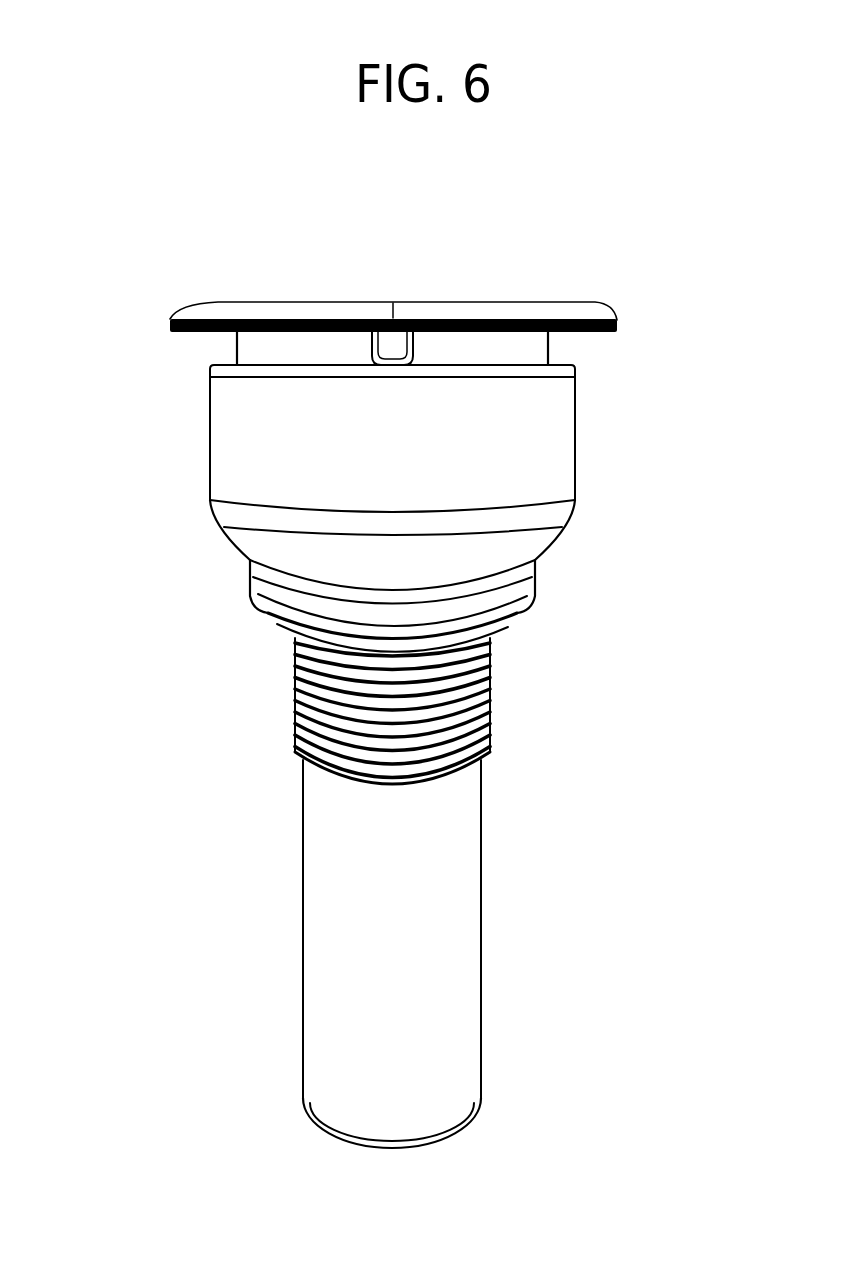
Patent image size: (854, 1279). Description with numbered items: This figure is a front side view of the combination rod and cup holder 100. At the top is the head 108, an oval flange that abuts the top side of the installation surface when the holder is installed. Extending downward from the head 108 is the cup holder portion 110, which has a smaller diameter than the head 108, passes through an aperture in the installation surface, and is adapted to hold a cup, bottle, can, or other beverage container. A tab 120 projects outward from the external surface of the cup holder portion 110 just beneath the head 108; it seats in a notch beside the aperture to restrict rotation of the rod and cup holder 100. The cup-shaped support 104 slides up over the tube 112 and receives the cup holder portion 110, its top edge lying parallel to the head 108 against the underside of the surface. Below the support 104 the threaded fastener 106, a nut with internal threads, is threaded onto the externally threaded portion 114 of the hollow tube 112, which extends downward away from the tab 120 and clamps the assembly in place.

The combination rod and cup holder 100 is at (168, 210).
The support 104 is at (568, 425).
The threaded fastener 106 is at (499, 632).
The head 108 is at (615, 321).
The cup holder portion 110 is at (545, 350).
The tube 112 is at (471, 842).
The threaded portion 114 is at (490, 693).
The tab 120 is at (393, 337).